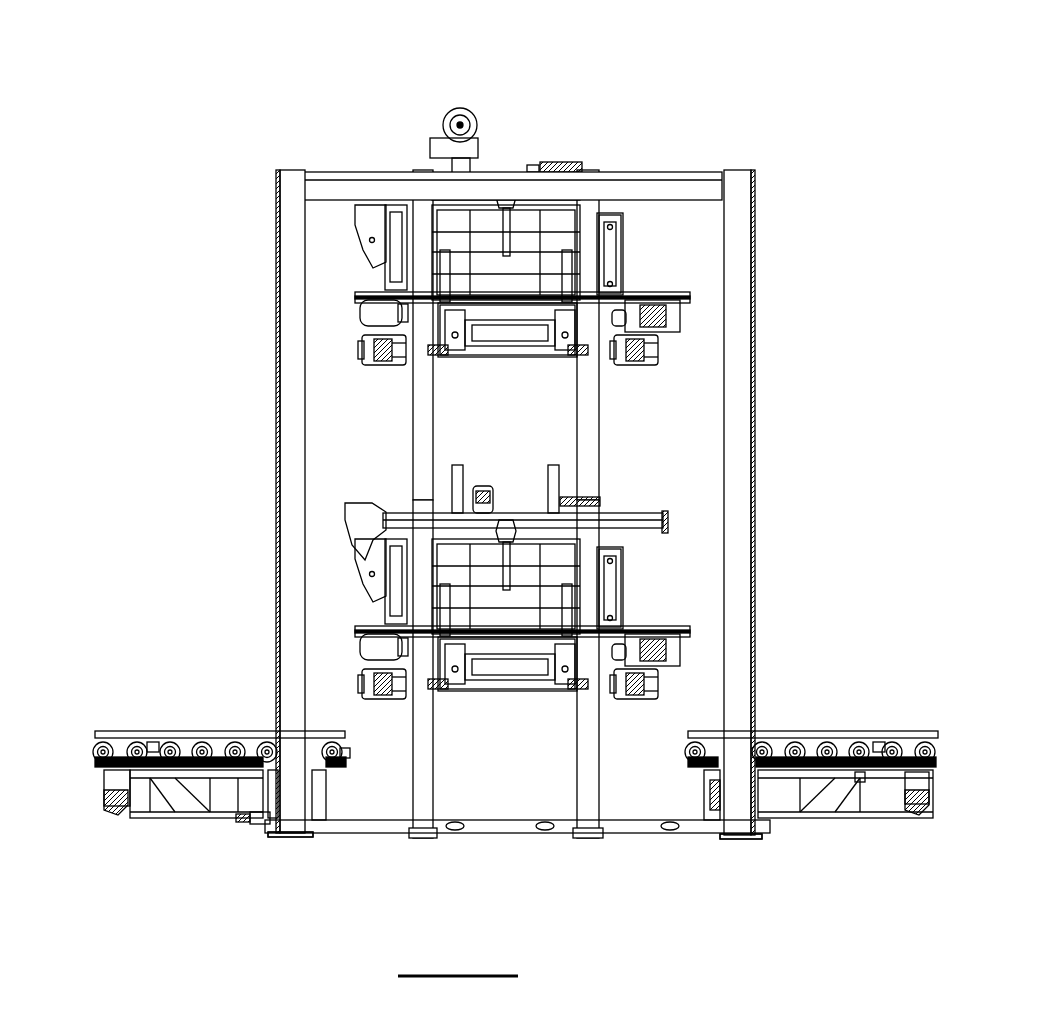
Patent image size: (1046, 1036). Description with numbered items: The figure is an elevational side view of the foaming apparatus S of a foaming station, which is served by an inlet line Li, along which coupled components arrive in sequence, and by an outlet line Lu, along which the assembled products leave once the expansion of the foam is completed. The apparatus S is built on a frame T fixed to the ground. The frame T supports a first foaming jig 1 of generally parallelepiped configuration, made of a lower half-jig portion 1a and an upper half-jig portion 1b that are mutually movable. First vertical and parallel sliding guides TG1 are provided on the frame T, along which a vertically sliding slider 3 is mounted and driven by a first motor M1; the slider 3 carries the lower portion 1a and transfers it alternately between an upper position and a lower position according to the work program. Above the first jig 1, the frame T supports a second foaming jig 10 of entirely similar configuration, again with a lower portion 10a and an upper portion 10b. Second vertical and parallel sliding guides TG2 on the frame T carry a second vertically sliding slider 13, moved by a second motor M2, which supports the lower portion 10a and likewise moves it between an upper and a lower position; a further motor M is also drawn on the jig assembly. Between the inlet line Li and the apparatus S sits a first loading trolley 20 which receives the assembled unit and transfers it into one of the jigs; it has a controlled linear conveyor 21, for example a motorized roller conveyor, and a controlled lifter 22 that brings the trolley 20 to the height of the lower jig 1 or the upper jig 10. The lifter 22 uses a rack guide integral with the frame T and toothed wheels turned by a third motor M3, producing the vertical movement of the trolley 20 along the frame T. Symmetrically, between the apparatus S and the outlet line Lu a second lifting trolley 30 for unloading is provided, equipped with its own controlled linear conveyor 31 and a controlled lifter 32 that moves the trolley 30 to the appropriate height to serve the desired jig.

The foaming apparatus S is at (716, 84).
The frame T is at (742, 392).
The second vertical and parallel sliding guides TG2 is at (600, 392).
The first vertical and parallel sliding guides TG1 is at (600, 746).
The second foaming jig 10 is at (518, 253).
The lower portion of the second jig 10a is at (620, 268).
The upper portion of the second jig 10b is at (500, 172).
The vertically sliding slider 13 is at (492, 326).
The motor M is at (642, 350).
The second motor M2 is at (380, 356).
The foaming jig 1 is at (517, 595).
The lower half-jig portion 1a is at (618, 602).
The upper half-jig portion 1b is at (618, 512).
The vertically sliding slider 3 is at (492, 660).
The first motor M1 is at (504, 704).
The first loading trolley 20 is at (221, 786).
The controlled linear conveyor 21 is at (108, 746).
The controlled lifter 22 is at (262, 838).
The third motor M3 is at (244, 822).
The second lifting trolley 30 is at (811, 777).
The controlled linear conveyor 31 is at (795, 752).
The controlled lifter 32 is at (768, 843).
The inlet line Li is at (58, 677).
The outlet line Lu is at (939, 678).